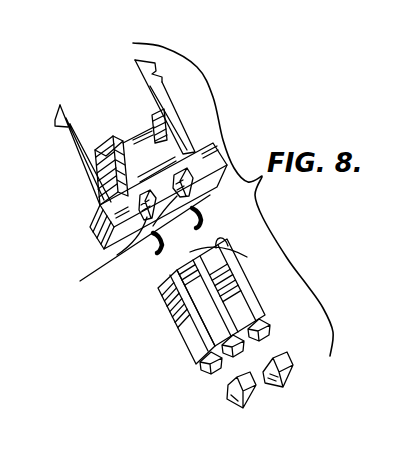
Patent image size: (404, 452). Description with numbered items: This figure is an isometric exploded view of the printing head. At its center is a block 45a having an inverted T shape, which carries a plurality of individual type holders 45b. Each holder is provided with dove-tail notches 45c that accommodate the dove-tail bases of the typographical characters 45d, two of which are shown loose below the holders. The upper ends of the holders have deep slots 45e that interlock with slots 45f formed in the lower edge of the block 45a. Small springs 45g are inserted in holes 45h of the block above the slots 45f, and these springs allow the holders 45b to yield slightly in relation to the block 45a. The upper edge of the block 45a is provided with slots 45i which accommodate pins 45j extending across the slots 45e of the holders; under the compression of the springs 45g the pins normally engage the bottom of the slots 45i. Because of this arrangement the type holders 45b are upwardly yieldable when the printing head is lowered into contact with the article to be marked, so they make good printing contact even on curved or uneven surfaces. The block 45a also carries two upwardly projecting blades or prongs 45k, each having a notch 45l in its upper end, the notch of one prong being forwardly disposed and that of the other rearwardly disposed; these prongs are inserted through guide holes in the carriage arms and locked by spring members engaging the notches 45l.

The block 45a is at (102, 195).
The type holders 45b is at (198, 346).
The dove-tail notches 45c is at (204, 368).
The typographical characters 45d is at (277, 388).
The deep slots 45e is at (220, 283).
The slots 45f is at (126, 253).
The small springs 45g is at (193, 214).
The holes 45h is at (193, 193).
The slots 45i is at (152, 115).
The pins 45j is at (228, 247).
The blades or prongs 45k is at (163, 102).
The notch 45l is at (63, 133).